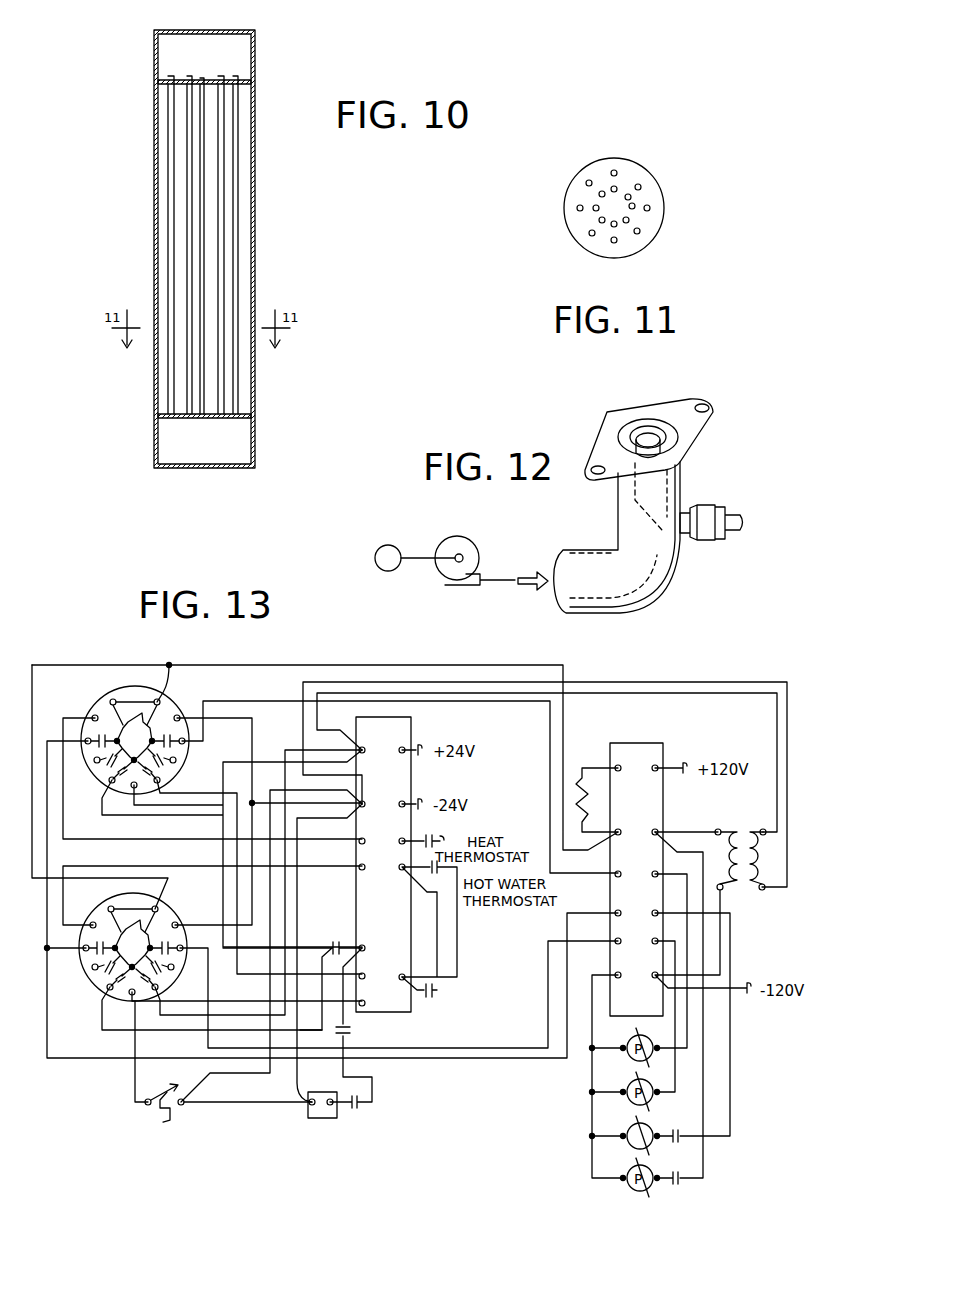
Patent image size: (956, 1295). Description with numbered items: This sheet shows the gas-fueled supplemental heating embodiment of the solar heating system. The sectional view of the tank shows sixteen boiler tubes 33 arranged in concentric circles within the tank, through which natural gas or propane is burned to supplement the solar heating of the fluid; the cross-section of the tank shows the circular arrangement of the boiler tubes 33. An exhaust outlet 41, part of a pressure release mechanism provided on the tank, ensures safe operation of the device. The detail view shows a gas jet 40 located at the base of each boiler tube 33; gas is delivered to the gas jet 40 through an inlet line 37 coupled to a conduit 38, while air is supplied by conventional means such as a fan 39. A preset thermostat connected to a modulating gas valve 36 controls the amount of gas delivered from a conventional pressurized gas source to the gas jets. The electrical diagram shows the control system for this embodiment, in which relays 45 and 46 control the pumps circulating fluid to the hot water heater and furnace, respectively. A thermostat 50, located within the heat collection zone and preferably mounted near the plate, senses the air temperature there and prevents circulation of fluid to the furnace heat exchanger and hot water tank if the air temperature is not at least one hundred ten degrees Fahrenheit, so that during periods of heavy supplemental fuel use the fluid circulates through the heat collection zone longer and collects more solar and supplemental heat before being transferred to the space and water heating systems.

In FIG. 10, the exhaust outlet 41 is at (156, 72).
In FIG. 10, the boiler tubes 33 is at (218, 228).
In FIG. 11, the boiler tubes 33 is at (590, 231).
In FIG. 12, the gas jet 40 is at (586, 428).
In FIG. 12, the conduit 38 is at (657, 587).
In FIG. 12, the inlet line 37 is at (733, 523).
In FIG. 12, the fan 39 is at (470, 550).
In FIG. 13, the relay 45 is at (98, 703).
In FIG. 13, the relay 46 is at (103, 979).
In FIG. 13, the modulating gas valve 36 is at (308, 1110).
In FIG. 13, the thermostat 50 is at (228, 1093).